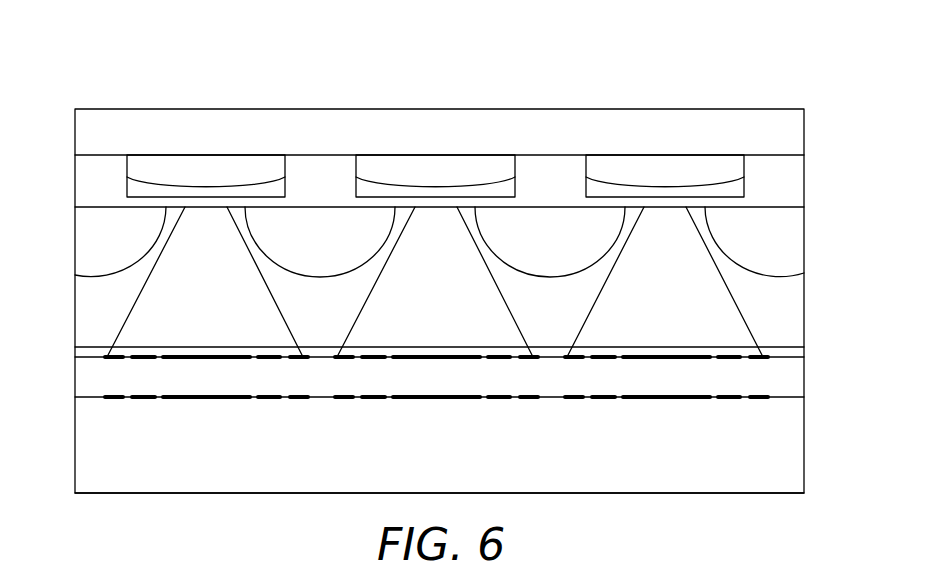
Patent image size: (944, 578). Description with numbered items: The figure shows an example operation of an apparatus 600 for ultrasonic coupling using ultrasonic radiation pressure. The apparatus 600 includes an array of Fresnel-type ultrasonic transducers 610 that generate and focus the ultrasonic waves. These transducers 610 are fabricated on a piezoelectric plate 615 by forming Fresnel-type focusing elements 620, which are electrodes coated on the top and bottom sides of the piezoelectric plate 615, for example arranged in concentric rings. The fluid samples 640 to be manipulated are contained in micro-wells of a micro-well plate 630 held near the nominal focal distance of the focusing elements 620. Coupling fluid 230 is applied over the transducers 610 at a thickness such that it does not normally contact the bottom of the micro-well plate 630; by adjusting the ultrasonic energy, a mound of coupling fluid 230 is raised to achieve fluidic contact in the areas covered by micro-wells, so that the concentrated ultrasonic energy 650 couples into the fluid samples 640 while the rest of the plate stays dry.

The apparatus 600 is at (734, 57).
The micro-well plate 630 is at (101, 175).
The fluid samples 640 is at (435, 175).
The coupling fluid 230 is at (550, 275).
The concentrated ultrasonic energy 650 is at (738, 303).
The piezoelectric plate 615 is at (805, 383).
The Fresnel-type focusing elements 620 is at (207, 398).
The Fresnel-type ultrasonic transducers 610 is at (172, 426).